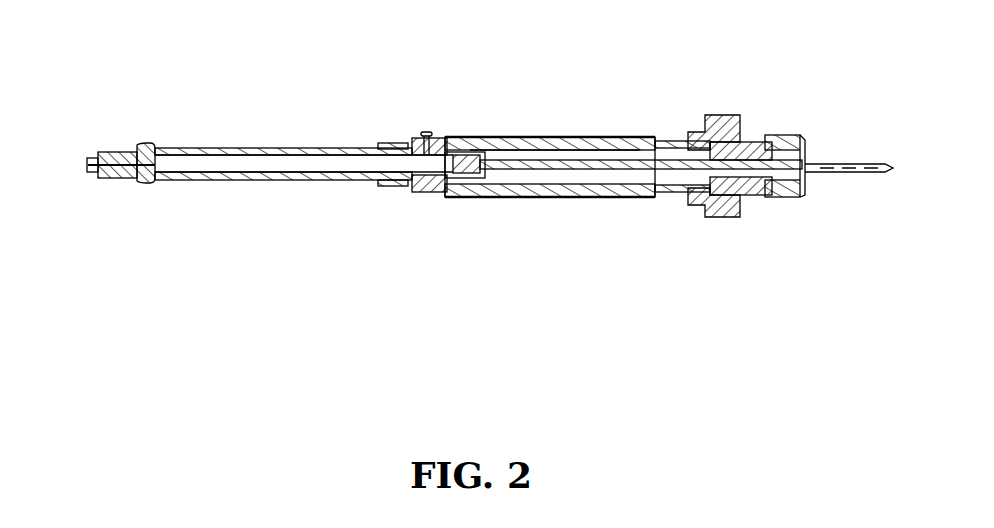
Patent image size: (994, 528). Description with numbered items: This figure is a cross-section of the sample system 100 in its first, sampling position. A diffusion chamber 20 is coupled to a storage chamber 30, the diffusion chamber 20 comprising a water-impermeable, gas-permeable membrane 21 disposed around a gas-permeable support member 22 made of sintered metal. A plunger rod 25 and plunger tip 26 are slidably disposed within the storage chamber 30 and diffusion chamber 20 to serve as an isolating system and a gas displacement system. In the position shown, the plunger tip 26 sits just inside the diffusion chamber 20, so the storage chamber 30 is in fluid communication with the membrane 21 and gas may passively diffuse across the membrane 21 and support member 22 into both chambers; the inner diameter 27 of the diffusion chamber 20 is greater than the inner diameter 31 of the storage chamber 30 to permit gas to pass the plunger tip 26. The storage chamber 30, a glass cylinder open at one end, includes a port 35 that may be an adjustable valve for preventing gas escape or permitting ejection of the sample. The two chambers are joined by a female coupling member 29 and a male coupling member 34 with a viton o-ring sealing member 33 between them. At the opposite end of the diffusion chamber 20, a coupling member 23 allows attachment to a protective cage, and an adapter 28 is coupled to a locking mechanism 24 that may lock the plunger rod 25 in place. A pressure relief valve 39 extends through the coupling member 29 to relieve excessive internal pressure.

The sample system 100 is at (385, 292).
The diffusion chamber 20 is at (565, 199).
The membrane 21 is at (543, 138).
The support member 22 is at (645, 138).
The coupling member 23 is at (712, 218).
The locking mechanism 24 is at (771, 200).
The plunger rod 25 is at (838, 163).
The plunger tip 26 is at (460, 175).
The inner diameter 27 is at (497, 157).
The adapter 28 is at (742, 135).
The coupling member 29 is at (427, 193).
The storage chamber 30 is at (285, 181).
The inner diameter 31 is at (250, 157).
The sealing member 33 is at (405, 143).
The coupling member 34 is at (404, 186).
The port 35 is at (110, 150).
The pressure relief valve 39 is at (427, 132).